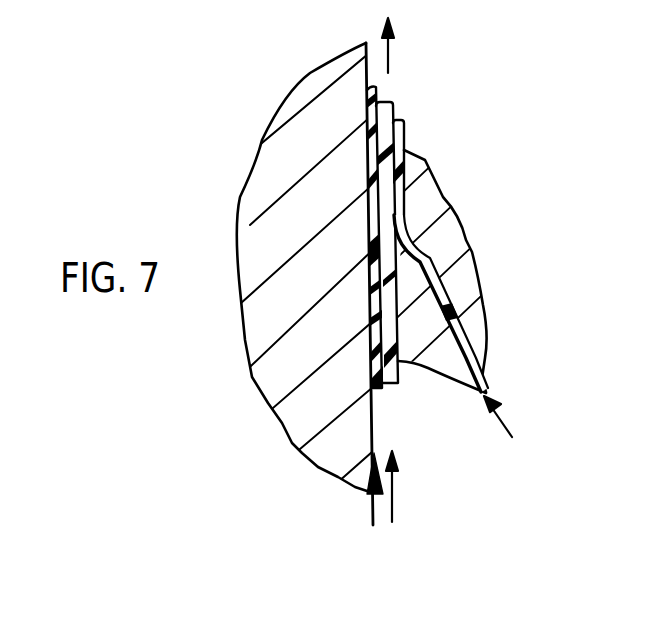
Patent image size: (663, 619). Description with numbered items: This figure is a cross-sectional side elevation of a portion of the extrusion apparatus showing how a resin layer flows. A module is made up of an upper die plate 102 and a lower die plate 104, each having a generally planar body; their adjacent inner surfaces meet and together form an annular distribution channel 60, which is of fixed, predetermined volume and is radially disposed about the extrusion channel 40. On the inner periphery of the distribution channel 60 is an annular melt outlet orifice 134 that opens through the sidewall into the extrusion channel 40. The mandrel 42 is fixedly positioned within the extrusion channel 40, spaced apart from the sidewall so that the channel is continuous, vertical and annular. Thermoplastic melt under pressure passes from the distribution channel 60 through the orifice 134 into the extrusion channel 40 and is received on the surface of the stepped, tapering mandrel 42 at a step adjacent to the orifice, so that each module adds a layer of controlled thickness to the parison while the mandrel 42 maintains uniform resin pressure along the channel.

The mandrel 42 is at (280, 160).
The extrusion channel 40 is at (383, 418).
The annular melt outlet orifice 134 is at (385, 258).
The upper die plate 102 is at (423, 195).
The lower die plate 104 is at (433, 358).
The distribution channel 60 is at (438, 290).